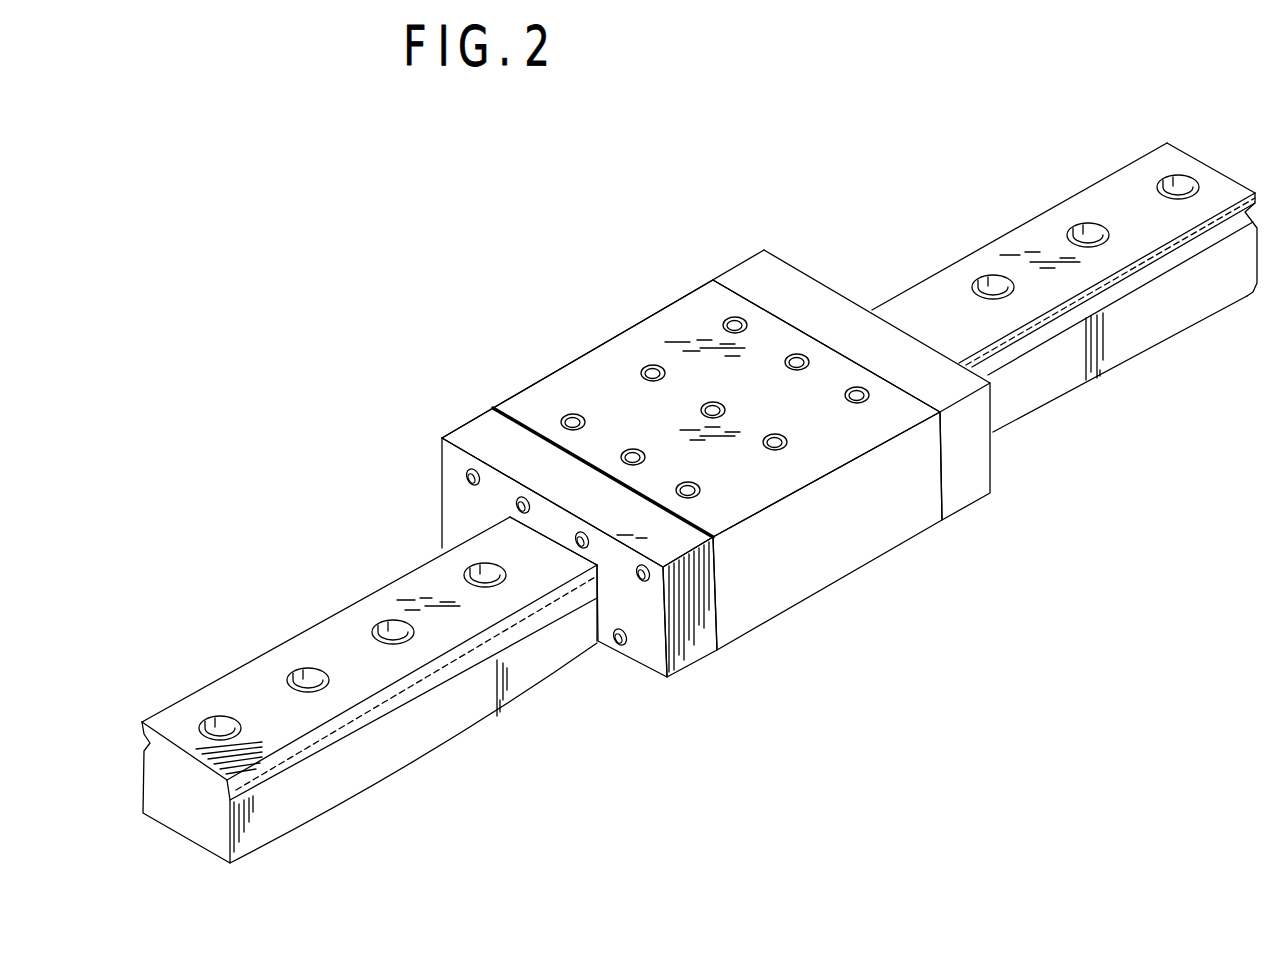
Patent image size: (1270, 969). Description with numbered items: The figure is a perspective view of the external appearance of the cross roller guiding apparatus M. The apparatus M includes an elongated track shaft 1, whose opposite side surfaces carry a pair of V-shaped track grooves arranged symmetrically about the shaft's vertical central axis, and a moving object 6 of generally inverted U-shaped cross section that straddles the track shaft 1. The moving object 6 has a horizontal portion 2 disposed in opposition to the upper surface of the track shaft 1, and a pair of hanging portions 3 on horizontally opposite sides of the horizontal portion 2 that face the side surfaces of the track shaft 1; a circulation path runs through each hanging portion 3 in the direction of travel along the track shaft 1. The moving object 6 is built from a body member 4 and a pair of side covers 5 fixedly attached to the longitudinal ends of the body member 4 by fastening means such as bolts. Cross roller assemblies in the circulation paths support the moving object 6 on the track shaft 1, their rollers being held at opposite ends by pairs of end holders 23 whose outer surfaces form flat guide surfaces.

The cross roller guiding apparatus M is at (681, 207).
The track shaft 1 is at (440, 738).
The horizontal portion 2 is at (692, 441).
The hanging portion 3 is at (797, 592).
The body member 4 is at (705, 300).
The side cover 5 is at (769, 262).
The moving object 6 is at (590, 355).
The end holder 23 is at (630, 450).